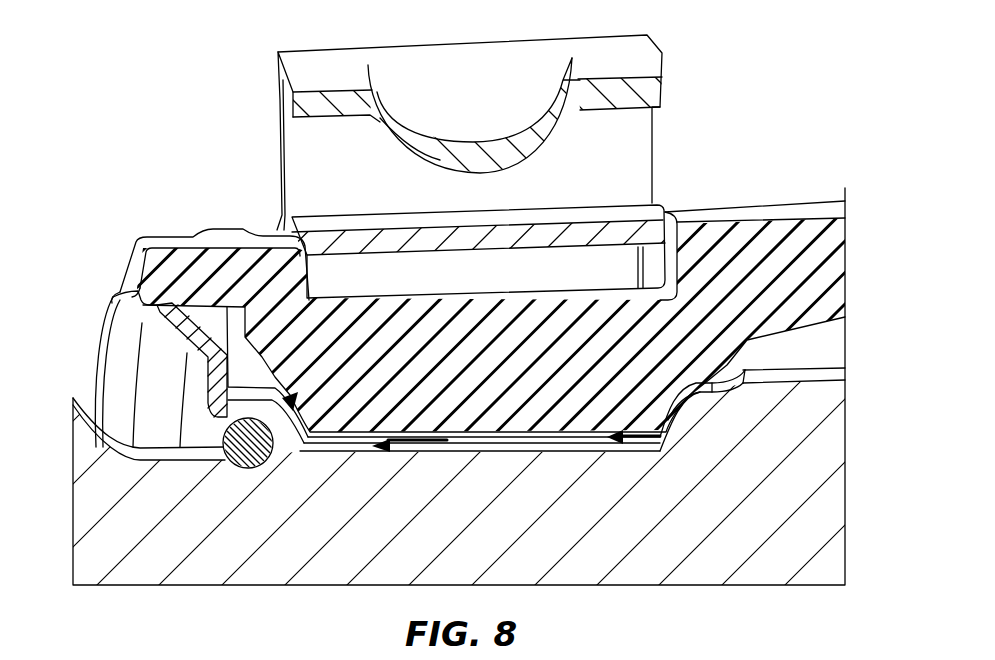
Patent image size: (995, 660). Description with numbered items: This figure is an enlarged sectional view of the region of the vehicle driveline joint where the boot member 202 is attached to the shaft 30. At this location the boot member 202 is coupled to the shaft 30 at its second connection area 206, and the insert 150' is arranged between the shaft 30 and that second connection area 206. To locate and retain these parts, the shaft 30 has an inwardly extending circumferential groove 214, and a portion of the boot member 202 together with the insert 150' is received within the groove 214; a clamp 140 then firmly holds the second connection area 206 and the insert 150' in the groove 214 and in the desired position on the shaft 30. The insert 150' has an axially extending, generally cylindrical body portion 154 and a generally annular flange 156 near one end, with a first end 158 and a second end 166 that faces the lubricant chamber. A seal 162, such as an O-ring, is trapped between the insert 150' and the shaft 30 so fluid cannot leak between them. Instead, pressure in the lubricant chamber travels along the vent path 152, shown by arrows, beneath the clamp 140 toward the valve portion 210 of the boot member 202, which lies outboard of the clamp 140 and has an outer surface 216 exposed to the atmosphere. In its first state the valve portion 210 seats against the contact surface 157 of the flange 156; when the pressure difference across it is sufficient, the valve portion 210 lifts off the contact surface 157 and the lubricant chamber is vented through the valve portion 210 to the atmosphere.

The shaft 30 is at (773, 530).
The clamp 140 is at (473, 227).
The insert 150' is at (141, 419).
The vent path 152 is at (413, 443).
The body portion 154 is at (563, 435).
The flange 156 is at (118, 292).
The contact surface 157 is at (168, 305).
The first end 158 is at (92, 381).
The seal 162 is at (240, 453).
The second end 166 is at (727, 393).
The boot member 202 is at (810, 263).
The second connection area 206 is at (490, 397).
The valve portion 210 is at (168, 268).
The groove 214 is at (703, 437).
The outer surface 216 is at (173, 242).